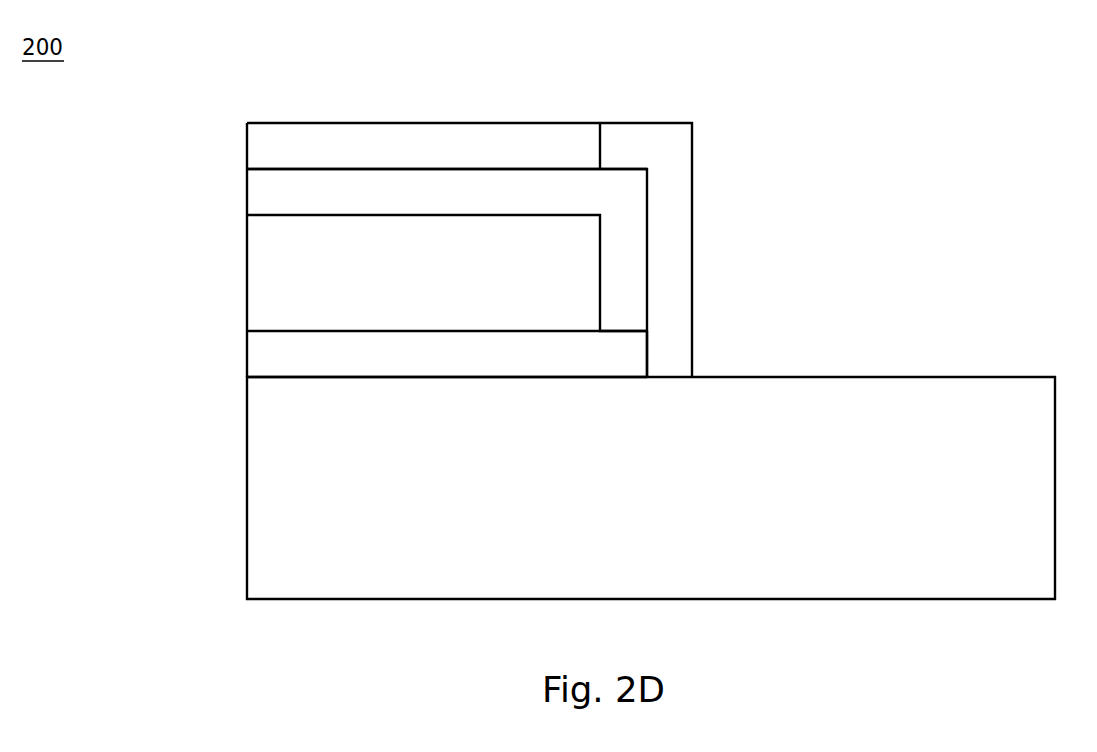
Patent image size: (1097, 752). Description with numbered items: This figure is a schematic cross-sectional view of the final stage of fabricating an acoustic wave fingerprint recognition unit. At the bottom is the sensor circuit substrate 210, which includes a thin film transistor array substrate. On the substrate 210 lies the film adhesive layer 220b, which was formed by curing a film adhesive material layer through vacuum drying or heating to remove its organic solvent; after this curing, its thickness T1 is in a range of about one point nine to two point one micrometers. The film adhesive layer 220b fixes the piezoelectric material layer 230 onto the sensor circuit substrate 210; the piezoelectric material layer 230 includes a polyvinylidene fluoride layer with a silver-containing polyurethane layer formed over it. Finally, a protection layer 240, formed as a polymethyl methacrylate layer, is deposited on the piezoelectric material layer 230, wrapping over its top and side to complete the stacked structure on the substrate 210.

The sensor circuit substrate 210 is at (247, 500).
The film adhesive layer 220b is at (623, 351).
The piezoelectric material layer 230 is at (240, 169).
The protection layer 240 is at (247, 146).
The thickness of the film adhesive layer T1 is at (247, 331).